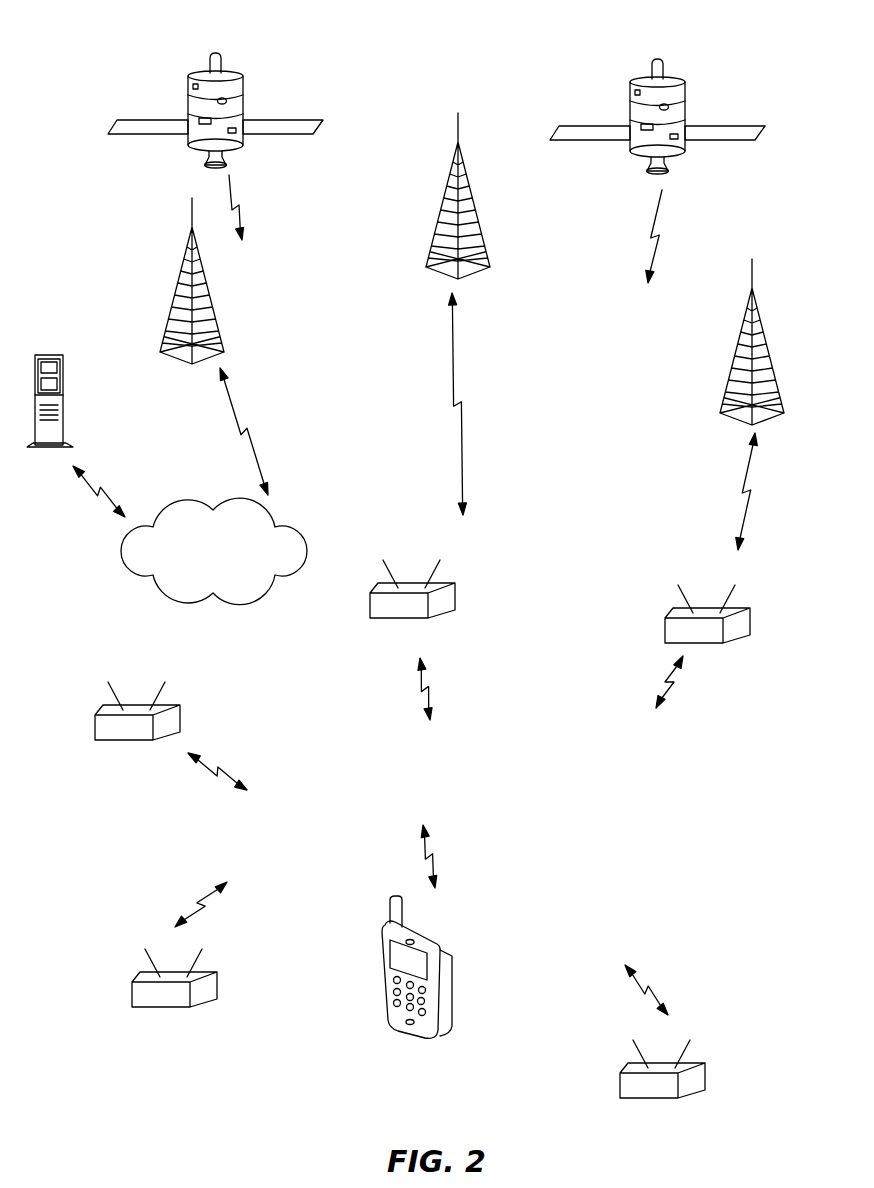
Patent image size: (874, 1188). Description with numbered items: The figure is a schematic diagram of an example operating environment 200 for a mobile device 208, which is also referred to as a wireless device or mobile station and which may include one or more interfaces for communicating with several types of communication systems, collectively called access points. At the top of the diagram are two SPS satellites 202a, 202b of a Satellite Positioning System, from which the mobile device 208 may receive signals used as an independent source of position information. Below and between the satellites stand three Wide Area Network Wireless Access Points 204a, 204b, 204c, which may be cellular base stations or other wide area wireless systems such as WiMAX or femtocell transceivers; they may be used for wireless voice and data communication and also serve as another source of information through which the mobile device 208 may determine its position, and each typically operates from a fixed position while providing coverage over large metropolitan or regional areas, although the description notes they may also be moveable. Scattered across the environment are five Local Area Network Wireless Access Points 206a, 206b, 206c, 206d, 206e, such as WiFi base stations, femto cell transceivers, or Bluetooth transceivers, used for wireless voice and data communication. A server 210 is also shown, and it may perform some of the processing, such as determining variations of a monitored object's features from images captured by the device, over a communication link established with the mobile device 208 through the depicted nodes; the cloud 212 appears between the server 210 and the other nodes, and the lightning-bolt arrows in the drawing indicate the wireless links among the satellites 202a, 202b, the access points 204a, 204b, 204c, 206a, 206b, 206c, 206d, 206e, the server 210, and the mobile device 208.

The operating environment 200 is at (108, 60).
The SPS satellite 202a is at (243, 84).
The SPS satellite 202b is at (685, 92).
The Wide Area Network Wireless Access Point 204a is at (189, 244).
The Wide Area Network Wireless Access Point 204b is at (461, 140).
The Wide Area Network Wireless Access Point 204c is at (764, 328).
The Local Area Network Wireless Access Point 206a is at (181, 708).
The Local Area Network Wireless Access Point 206b is at (456, 586).
The Local Area Network Wireless Access Point 206c is at (665, 620).
The Local Area Network Wireless Access Point 206d is at (133, 984).
The Local Area Network Wireless Access Point 206e is at (620, 1075).
The mobile device 208 is at (453, 950).
The server 210 is at (64, 360).
The network cloud 212 is at (188, 502).